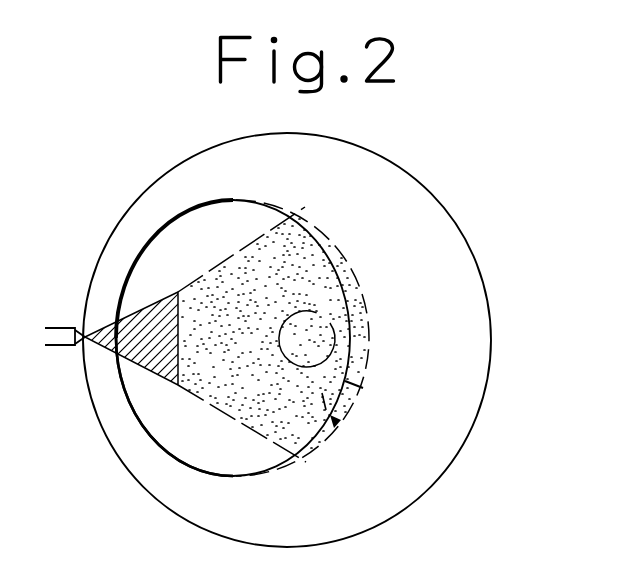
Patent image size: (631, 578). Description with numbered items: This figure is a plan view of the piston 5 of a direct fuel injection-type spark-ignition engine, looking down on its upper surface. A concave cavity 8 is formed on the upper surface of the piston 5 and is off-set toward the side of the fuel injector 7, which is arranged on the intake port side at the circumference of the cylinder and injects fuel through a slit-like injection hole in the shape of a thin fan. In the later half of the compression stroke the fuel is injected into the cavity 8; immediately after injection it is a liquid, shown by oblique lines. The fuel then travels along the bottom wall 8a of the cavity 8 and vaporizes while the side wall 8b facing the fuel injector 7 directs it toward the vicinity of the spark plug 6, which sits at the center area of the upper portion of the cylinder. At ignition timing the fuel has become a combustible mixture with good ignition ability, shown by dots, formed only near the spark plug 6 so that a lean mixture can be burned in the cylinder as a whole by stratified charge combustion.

The piston 5 is at (362, 180).
The spark plug 6 is at (318, 312).
The fuel injector 7 is at (57, 343).
The cavity 8 is at (183, 247).
The bottom wall 8a is at (177, 427).
The side wall 8b is at (363, 388).